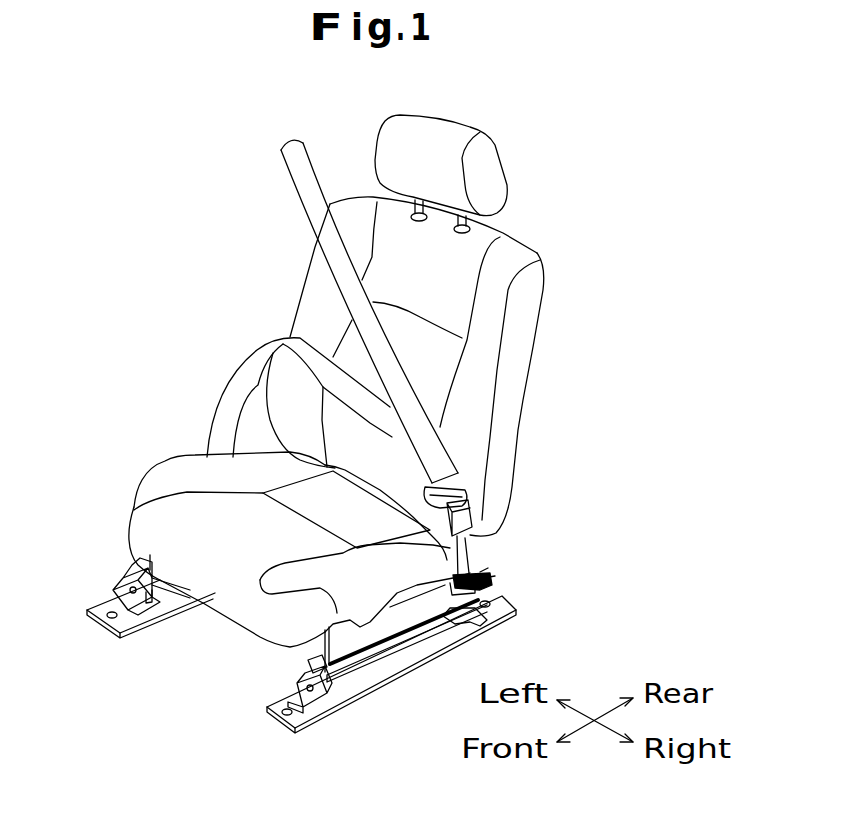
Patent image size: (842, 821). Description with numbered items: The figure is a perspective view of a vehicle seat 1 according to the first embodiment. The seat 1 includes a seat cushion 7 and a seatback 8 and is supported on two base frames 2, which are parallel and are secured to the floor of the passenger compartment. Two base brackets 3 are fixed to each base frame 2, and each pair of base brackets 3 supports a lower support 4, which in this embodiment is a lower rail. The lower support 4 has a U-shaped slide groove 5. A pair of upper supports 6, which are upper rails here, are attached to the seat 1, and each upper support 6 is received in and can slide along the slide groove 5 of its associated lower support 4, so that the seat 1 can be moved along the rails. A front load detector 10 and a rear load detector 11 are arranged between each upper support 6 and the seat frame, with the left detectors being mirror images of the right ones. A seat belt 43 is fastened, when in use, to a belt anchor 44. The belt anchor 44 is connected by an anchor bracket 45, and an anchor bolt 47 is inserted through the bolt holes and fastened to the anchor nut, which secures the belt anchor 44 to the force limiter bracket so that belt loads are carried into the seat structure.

The seat 1 is at (197, 241).
The base frame 2 is at (322, 707).
The base bracket 3 is at (125, 578).
The lower support 4 is at (383, 650).
The slide groove 5 is at (305, 662).
The upper support 6 is at (410, 617).
The seat cushion 7 is at (167, 477).
The seatback 8 is at (527, 360).
The front load detector 10 is at (346, 612).
The rear load detector 11 is at (495, 578).
The seat belt 43 is at (383, 340).
The belt anchor 44 is at (476, 520).
The anchor bracket 45 is at (490, 553).
The anchor bolt 47 is at (495, 592).